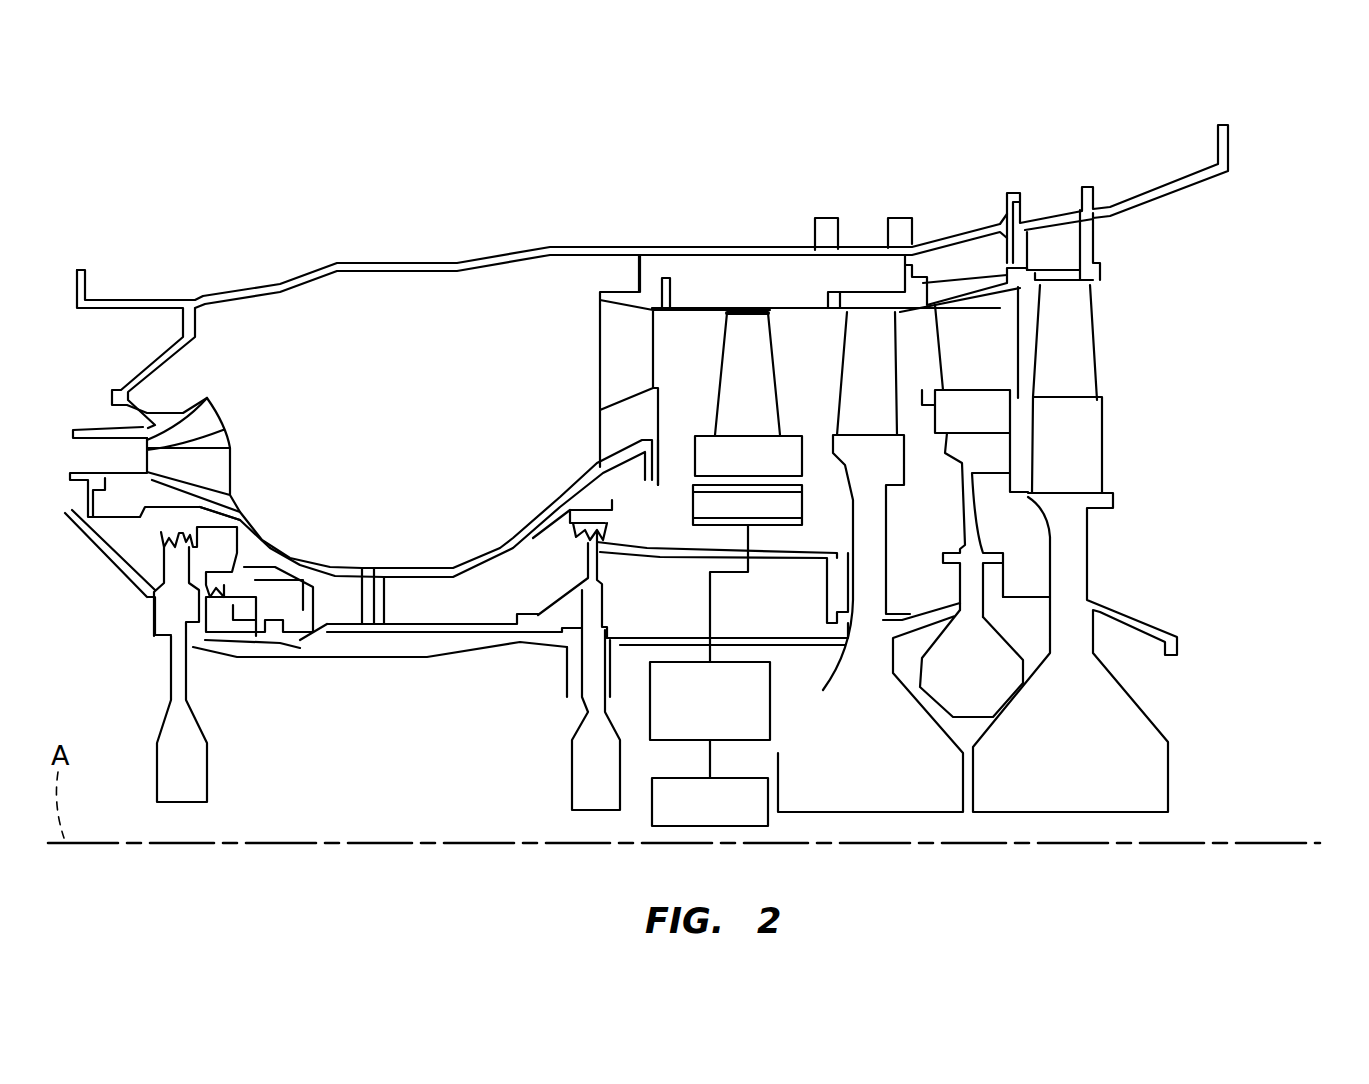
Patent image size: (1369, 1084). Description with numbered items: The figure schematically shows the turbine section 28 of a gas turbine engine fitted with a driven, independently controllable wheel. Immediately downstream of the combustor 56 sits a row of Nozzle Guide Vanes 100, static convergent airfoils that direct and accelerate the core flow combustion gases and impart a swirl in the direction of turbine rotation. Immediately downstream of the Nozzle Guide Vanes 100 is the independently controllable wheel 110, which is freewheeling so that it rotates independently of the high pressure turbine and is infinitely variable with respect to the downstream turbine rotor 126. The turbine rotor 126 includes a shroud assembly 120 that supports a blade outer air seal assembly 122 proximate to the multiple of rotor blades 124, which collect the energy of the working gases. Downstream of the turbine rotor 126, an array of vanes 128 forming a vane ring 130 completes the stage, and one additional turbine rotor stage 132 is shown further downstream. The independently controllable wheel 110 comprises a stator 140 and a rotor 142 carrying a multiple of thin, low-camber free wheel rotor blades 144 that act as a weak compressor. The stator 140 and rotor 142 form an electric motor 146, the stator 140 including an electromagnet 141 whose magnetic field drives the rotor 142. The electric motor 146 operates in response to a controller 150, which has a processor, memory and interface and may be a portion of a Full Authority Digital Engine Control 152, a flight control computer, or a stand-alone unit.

The turbine section 28 is at (1110, 134).
The combustor 56 is at (361, 486).
The Nozzle Guide Vanes 100 is at (632, 338).
The independently controllable wheel 110 is at (727, 280).
The shroud assembly 120 is at (868, 280).
The blade outer air seal assembly 122 is at (857, 308).
The rotor blades 124 is at (866, 501).
The turbine rotor 126 is at (868, 608).
The vanes 128 is at (975, 452).
The vane ring 130 is at (1023, 262).
The additional turbine rotor stages 132 is at (1100, 377).
The stator 140 is at (718, 513).
The electromagnet 141 is at (783, 487).
The rotor 142 is at (786, 448).
The free wheel rotor blades 144 is at (733, 350).
The electric motor 146 is at (647, 490).
The controller 150 is at (770, 703).
The Full Authority Digital Engine Control 152 is at (773, 802).